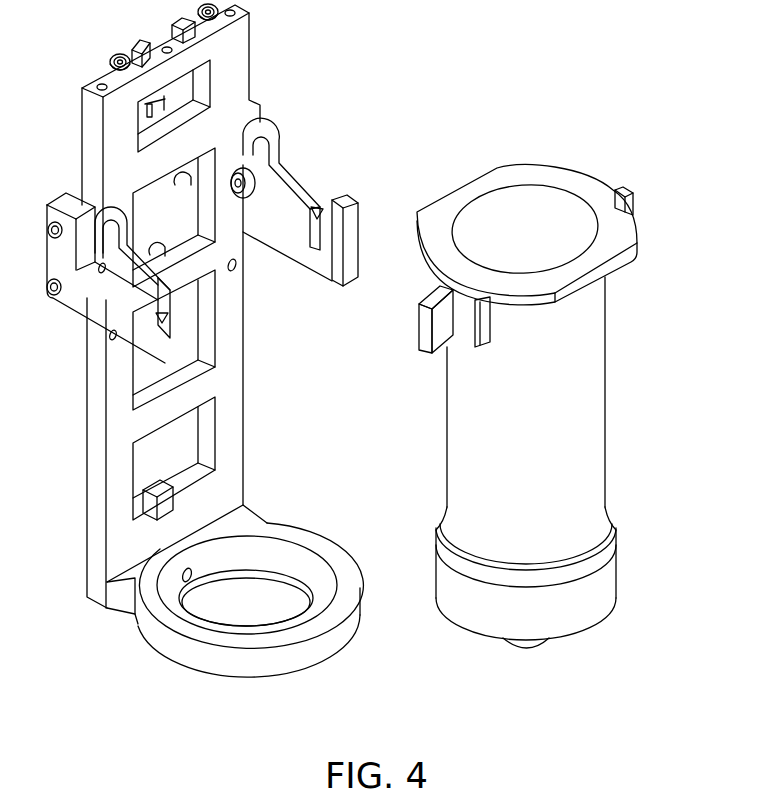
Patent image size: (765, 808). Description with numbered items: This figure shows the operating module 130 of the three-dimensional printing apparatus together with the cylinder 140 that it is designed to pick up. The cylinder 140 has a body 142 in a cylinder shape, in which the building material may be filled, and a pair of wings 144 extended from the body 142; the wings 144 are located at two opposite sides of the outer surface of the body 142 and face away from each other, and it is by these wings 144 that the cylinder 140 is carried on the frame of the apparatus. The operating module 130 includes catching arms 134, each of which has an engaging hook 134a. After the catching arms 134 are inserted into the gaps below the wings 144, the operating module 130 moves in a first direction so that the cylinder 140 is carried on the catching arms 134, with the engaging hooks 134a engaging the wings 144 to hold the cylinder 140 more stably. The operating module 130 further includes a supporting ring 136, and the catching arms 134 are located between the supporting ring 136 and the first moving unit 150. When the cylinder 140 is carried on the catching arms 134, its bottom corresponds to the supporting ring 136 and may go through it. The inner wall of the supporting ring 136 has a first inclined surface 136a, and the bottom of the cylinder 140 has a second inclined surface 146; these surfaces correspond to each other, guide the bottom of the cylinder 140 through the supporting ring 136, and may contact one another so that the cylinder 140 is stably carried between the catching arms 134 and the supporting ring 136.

The operating module 130 is at (305, 86).
The catching arms 134 is at (279, 197).
The engaging hook 134a is at (323, 204).
The supporting ring 136 is at (173, 623).
The first inclined surface 136a is at (174, 610).
The cylinder 140 is at (634, 368).
The body 142 is at (520, 173).
The wings 144 is at (615, 188).
The second inclined surface 146 is at (477, 640).
The first moving unit 150 is at (107, 80).